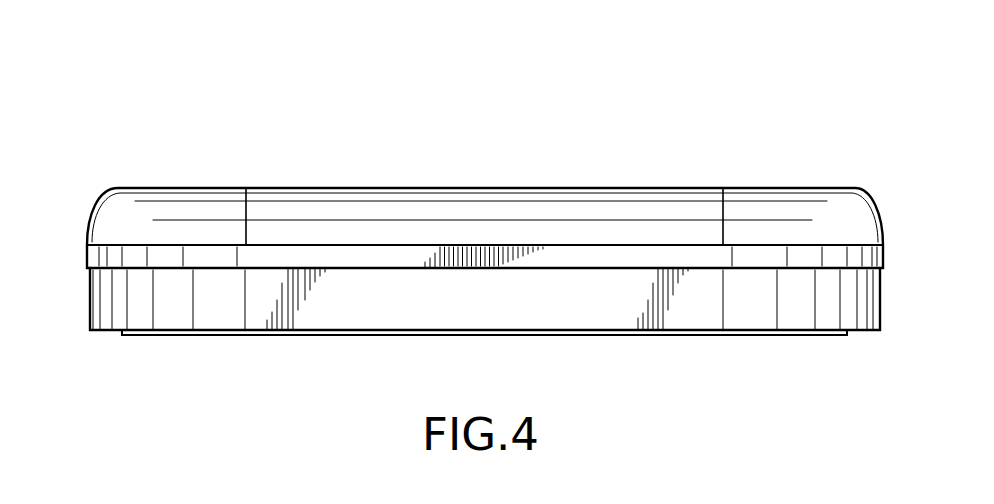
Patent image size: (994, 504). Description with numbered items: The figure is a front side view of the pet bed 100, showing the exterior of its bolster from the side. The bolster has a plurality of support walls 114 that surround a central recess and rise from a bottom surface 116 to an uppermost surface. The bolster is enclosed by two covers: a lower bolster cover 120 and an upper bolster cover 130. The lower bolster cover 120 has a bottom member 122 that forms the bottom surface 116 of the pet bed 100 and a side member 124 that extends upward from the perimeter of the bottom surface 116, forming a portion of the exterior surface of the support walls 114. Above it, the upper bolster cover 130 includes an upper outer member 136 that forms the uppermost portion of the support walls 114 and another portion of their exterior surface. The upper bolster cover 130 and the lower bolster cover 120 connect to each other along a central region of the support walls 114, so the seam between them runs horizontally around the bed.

The pet bed 100 is at (152, 86).
The support walls 114 is at (100, 257).
The bottom surface 116 is at (287, 336).
The lower bolster cover 120 is at (167, 303).
The bottom member 122 is at (373, 333).
The side member 124 is at (613, 312).
The upper bolster cover 130 is at (322, 212).
The upper outer member 136 is at (494, 233).